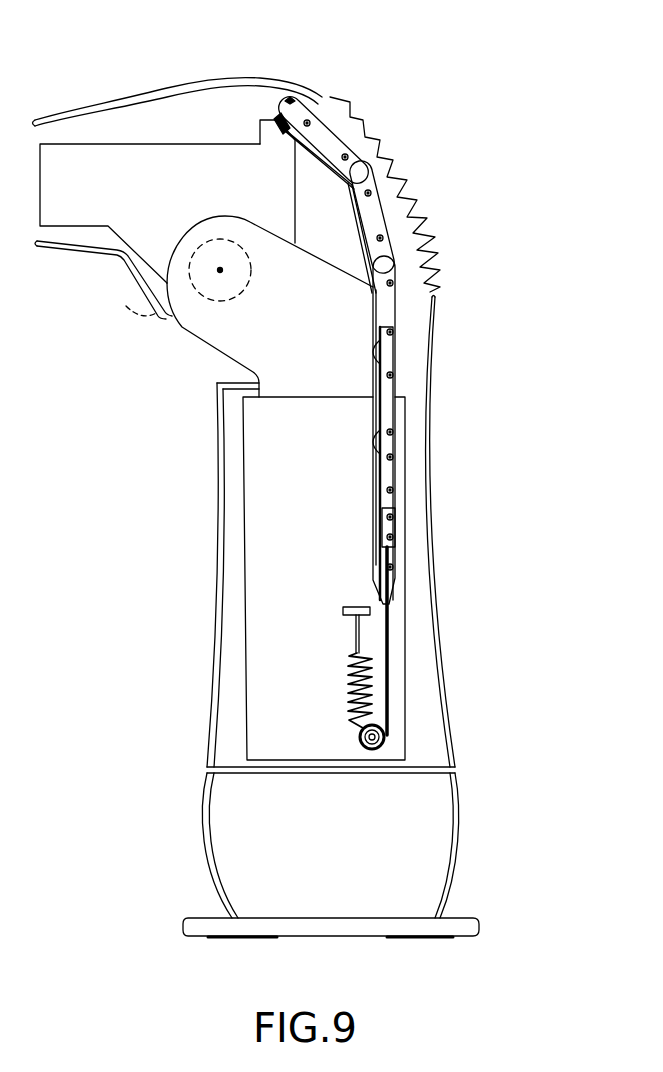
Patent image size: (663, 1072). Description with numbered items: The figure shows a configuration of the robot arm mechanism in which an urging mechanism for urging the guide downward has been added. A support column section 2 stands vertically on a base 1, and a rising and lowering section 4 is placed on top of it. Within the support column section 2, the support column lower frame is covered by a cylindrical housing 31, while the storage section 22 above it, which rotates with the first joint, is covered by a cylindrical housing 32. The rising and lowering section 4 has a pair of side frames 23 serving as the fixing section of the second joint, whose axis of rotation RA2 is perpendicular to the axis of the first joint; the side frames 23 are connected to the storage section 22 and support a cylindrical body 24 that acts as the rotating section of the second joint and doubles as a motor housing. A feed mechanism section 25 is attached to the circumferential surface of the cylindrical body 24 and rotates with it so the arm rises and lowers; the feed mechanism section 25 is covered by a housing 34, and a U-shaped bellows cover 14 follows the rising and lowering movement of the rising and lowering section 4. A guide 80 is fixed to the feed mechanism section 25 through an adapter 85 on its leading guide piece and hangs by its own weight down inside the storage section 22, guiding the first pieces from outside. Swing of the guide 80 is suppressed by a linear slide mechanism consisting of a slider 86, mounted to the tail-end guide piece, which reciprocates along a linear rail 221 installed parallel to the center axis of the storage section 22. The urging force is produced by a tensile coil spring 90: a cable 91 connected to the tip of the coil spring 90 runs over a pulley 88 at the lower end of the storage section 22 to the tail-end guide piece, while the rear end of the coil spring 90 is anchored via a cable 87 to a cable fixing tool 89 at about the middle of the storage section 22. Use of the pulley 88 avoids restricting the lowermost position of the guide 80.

The housing 34 is at (137, 98).
The adapter 85 is at (278, 124).
The rising and lowering section 4 is at (360, 73).
The bellows cover 14 is at (415, 192).
The feed mechanism section 25 is at (75, 228).
The cylindrical body 24 is at (172, 298).
The side frames 23 is at (182, 328).
The axis of rotation RA2 is at (220, 274).
The storage section 22 is at (240, 440).
The cylindrical housing 32 is at (225, 508).
The cable fixing tool 89 is at (343, 611).
The cable 87 is at (355, 628).
The tensile coil spring 90 is at (350, 683).
The guide 80 is at (416, 333).
The linear rail 221 is at (395, 410).
The support column section 2 is at (545, 465).
The slider 86 is at (410, 536).
The cable 91 is at (395, 633).
The pulley 88 is at (383, 727).
The cylindrical housing 31 is at (207, 811).
The base 1 is at (479, 918).